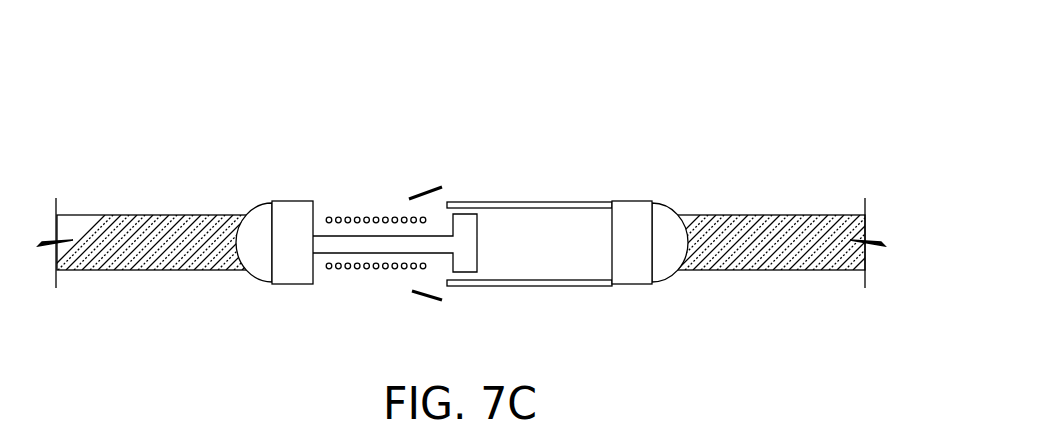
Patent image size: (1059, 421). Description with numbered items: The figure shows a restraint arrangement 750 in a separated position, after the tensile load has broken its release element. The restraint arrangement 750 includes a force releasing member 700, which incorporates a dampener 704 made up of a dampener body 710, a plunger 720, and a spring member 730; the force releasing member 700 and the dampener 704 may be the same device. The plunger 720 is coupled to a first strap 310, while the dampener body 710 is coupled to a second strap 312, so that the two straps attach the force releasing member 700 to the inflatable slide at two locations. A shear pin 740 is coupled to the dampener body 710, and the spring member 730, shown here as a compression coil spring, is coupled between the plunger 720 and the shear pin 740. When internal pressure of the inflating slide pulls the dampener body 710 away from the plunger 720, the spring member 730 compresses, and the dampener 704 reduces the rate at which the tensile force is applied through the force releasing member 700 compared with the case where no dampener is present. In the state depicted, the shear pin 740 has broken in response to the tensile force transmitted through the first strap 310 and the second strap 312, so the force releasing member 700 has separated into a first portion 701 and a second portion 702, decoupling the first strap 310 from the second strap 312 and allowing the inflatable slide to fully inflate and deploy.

The first strap 310 is at (156, 258).
The second strap 312 is at (773, 215).
The force releasing member 700 is at (477, 175).
The first portion 701 is at (290, 190).
The second portion 702 is at (650, 170).
The dampener 704 is at (477, 175).
The dampener body 710 is at (560, 203).
The plunger 720 is at (463, 216).
The spring member 730 is at (353, 212).
The shear pin 740 is at (419, 193).
The restraint arrangement 750 is at (583, 153).